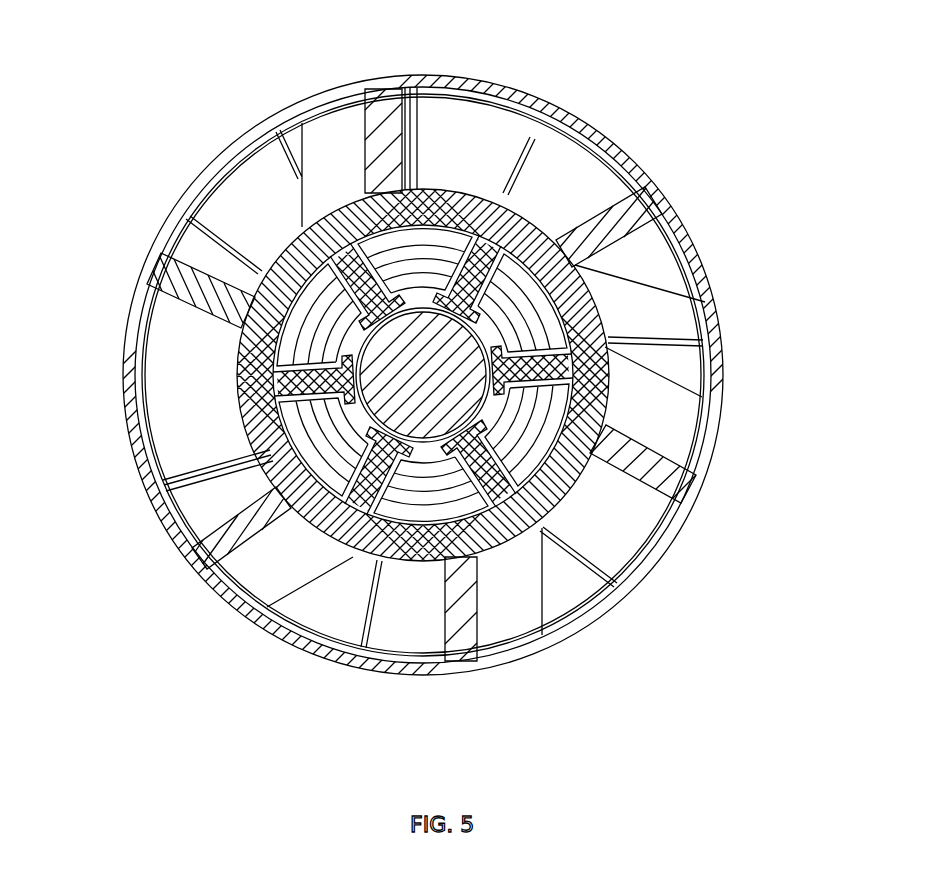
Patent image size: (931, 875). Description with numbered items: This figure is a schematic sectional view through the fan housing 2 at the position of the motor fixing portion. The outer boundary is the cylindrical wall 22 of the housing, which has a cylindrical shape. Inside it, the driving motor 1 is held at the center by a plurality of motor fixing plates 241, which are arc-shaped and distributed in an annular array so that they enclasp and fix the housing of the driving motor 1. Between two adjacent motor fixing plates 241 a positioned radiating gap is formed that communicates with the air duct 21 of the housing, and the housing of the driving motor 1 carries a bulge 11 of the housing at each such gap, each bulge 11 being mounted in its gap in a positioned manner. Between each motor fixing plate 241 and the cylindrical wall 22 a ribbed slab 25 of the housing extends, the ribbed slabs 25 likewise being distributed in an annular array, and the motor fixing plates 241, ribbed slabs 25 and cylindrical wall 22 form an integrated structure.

The driving motor 1 is at (550, 233).
The bulge of housing 11 is at (603, 326).
The fan housing 2 is at (200, 162).
The air duct of housing 21 is at (195, 352).
The cylindrical wall of housing 22 is at (230, 597).
The motor fixing plate 241 is at (578, 267).
The ribbed slab of housing 25 is at (387, 142).